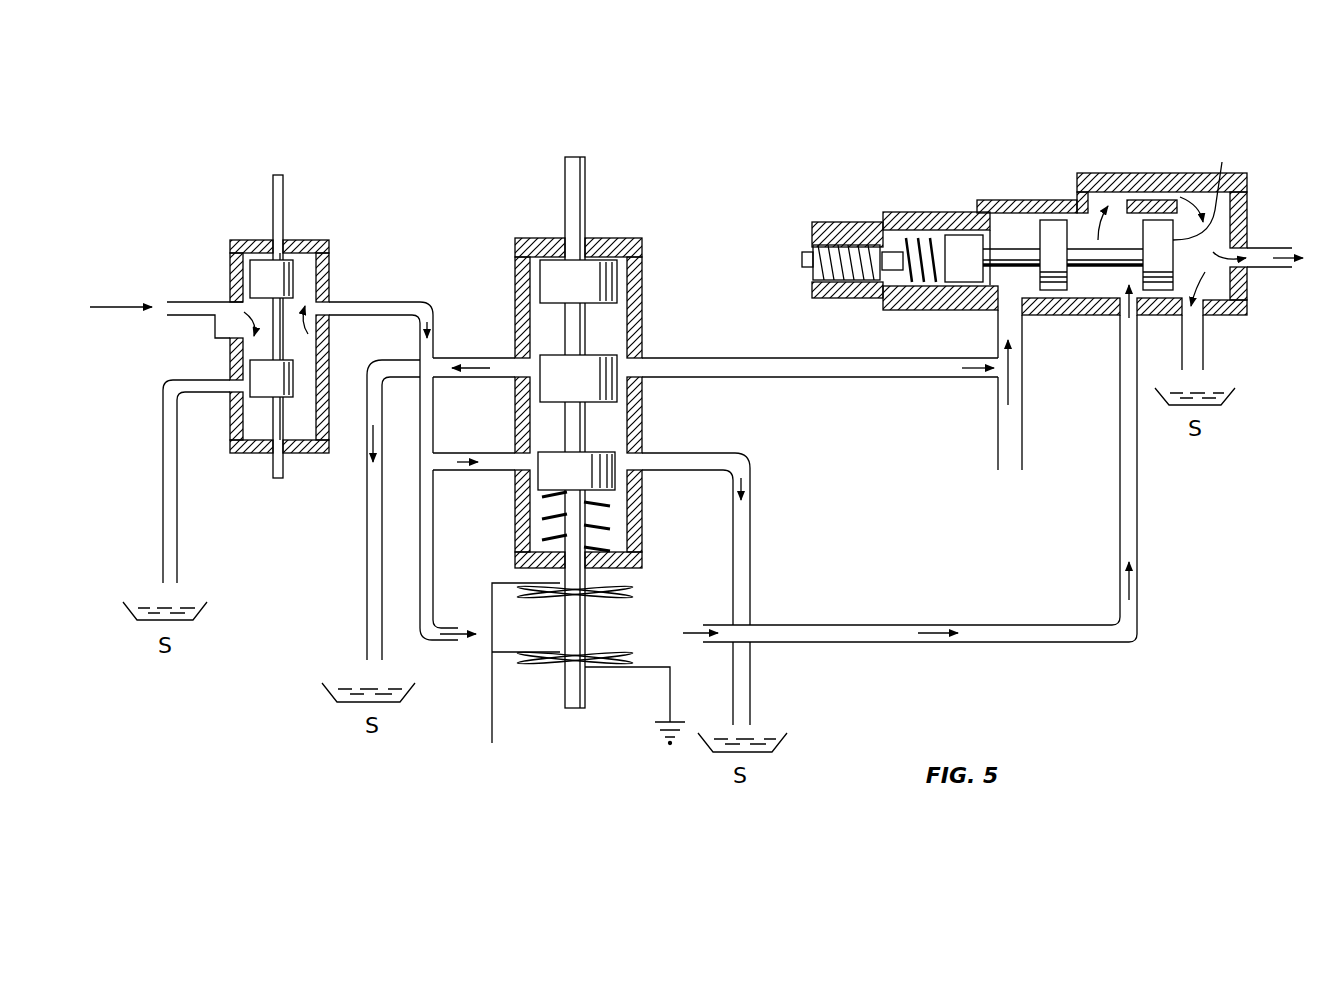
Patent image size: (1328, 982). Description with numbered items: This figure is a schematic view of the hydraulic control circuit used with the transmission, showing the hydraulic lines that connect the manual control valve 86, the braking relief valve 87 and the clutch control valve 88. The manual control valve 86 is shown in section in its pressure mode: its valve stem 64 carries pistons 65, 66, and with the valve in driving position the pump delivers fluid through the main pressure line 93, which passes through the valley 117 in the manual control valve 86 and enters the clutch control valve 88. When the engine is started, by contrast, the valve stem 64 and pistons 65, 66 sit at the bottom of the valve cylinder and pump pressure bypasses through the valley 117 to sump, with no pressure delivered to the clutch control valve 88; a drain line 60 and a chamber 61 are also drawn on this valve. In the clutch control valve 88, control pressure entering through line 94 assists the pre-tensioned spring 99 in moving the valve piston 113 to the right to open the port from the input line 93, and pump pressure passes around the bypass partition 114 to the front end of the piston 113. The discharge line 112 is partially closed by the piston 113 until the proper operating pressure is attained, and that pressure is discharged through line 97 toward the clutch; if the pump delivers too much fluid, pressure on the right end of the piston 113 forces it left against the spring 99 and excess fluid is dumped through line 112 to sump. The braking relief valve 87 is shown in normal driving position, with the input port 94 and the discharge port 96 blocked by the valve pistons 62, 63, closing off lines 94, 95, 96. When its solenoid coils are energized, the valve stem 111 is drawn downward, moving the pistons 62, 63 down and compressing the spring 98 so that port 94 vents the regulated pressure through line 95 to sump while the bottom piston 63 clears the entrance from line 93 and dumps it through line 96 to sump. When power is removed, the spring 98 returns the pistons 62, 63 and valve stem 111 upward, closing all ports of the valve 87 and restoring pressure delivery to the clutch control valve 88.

The drain line 60 is at (163, 472).
The valve spool 61 is at (260, 400).
The valve piston 62 is at (607, 360).
The valve piston 63 is at (647, 500).
The valve stem 64 is at (286, 462).
The piston 65 is at (302, 383).
The piston 66 is at (302, 288).
The manual control valve 86 is at (241, 468).
The braking relief valve 87 is at (652, 417).
The clutch control valve 88 is at (1079, 318).
The main pressure line 93 is at (196, 302).
The input port 94 is at (843, 378).
The line 95 is at (366, 577).
The discharge port 96 is at (750, 560).
The line 97 is at (1262, 248).
The spring 98 is at (542, 530).
The spring 99 is at (893, 247).
The valve stem 111 is at (563, 616).
The discharge line 112 is at (1203, 345).
The valve piston 113 is at (1212, 185).
The bypass partition 114 is at (1150, 200).
The valley 117 is at (215, 325).